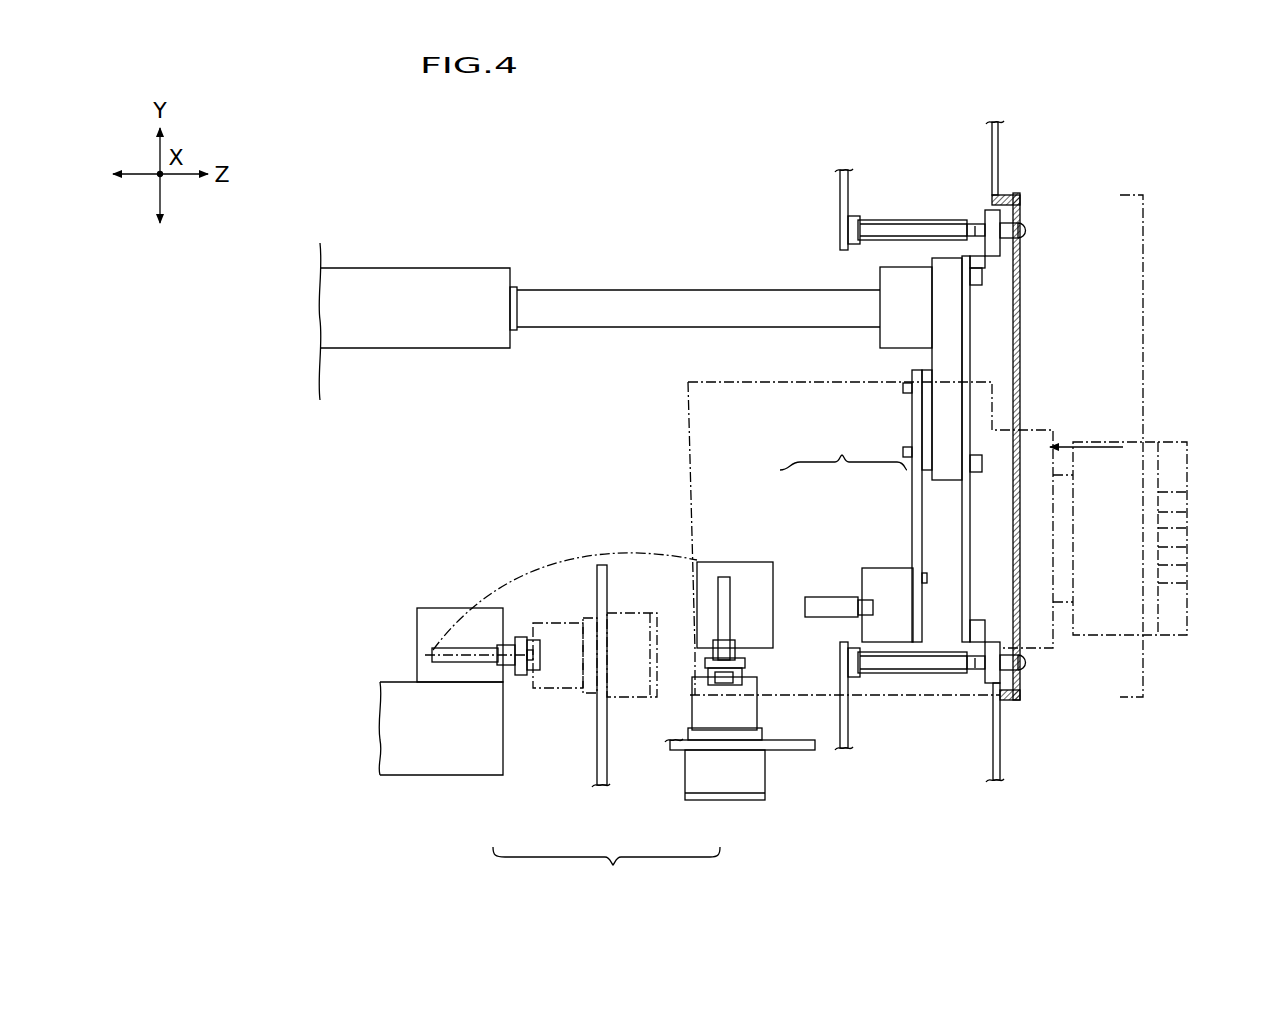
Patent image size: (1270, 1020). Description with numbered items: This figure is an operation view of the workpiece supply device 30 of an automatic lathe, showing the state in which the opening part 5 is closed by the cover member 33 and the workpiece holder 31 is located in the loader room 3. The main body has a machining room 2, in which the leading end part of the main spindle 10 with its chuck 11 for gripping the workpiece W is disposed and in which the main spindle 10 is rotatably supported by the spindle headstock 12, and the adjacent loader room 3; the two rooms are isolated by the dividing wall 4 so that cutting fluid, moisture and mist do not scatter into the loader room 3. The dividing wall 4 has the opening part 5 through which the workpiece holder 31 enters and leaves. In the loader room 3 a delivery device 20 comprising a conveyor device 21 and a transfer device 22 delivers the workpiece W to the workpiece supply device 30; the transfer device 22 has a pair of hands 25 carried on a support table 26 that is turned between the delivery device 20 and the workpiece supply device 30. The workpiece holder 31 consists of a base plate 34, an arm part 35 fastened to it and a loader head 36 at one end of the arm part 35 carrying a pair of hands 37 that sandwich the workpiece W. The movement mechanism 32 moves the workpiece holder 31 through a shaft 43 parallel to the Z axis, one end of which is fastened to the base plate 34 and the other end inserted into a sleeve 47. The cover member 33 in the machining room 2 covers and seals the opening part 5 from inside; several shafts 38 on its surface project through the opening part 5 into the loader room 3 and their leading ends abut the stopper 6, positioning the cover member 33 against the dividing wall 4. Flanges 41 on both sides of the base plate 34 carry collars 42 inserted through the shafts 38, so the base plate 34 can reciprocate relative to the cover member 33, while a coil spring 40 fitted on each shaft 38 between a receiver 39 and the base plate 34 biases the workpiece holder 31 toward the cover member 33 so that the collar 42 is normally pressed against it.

The machining room 2 is at (1093, 92).
The loader room 3 is at (750, 92).
The dividing wall 4 is at (997, 163).
The opening part 5 is at (1007, 210).
The stopper 6 is at (838, 200).
The main spindle 10 is at (1040, 430).
The chuck 11 is at (1167, 448).
The spindle headstock 12 is at (800, 697).
The delivery device 20 is at (576, 723).
The conveyor device 21 is at (482, 778).
The transfer device 22 is at (710, 773).
The hands 25 is at (728, 585).
The support table 26 is at (700, 708).
The workpiece supply device 30 is at (1023, 275).
The workpiece holder 31 is at (843, 448).
The movement mechanism 32 is at (665, 290).
The cover member 33 is at (1020, 330).
The base plate 34 is at (962, 520).
The arm part 35 is at (912, 552).
The loader head 36 is at (880, 578).
The hands 37 is at (812, 597).
The shaft 38 is at (935, 230).
The receiver 39 is at (855, 220).
The coil spring 40 is at (893, 220).
The flange 41 is at (975, 217).
The collar 42 is at (982, 218).
The shaft 43 is at (692, 300).
The sleeve 47 is at (400, 278).
The workpiece W is at (740, 560).